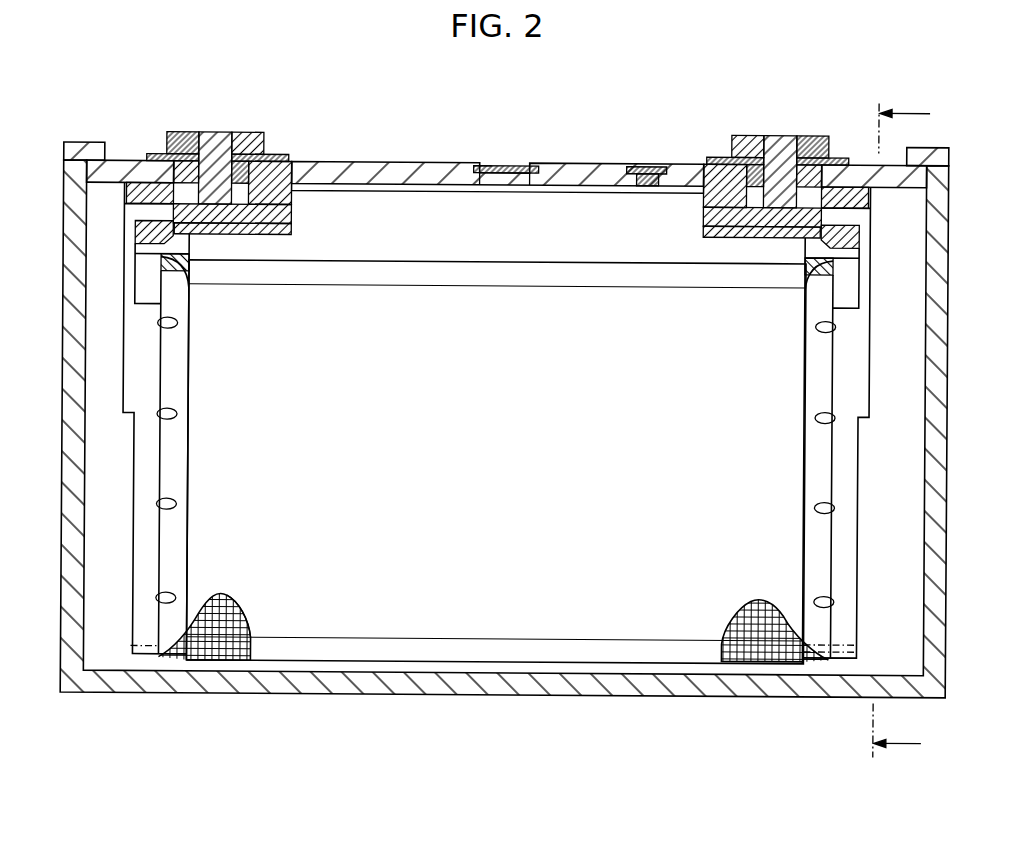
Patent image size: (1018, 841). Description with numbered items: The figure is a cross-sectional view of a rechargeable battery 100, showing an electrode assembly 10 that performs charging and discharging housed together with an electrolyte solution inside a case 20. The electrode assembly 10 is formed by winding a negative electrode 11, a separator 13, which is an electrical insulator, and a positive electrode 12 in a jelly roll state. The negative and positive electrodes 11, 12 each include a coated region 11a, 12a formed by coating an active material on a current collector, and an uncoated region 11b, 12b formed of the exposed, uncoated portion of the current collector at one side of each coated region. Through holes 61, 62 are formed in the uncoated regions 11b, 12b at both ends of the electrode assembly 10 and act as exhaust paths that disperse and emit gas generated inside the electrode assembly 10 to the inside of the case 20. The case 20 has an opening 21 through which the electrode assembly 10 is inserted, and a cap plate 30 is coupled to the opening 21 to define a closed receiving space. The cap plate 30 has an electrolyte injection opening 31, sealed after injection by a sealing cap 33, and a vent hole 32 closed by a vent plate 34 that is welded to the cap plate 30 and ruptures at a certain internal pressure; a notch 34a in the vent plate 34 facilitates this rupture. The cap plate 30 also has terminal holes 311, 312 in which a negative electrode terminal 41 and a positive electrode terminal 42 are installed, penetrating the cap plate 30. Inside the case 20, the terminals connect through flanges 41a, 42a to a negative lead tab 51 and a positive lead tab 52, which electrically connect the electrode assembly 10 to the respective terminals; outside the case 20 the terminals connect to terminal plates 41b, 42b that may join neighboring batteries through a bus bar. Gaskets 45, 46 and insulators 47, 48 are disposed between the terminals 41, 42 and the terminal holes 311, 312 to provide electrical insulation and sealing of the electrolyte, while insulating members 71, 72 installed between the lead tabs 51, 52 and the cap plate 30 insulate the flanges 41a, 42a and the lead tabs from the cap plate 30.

The rechargeable battery 100 is at (508, 421).
The electrode assembly 10 is at (496, 499).
The negative electrode 11 is at (188, 684).
The coated region 11a is at (204, 664).
The uncoated region 11b is at (158, 690).
The positive electrode 12 is at (785, 686).
The coated region 12a is at (775, 670).
The uncoated region 12b is at (829, 692).
The separator 13 is at (280, 667).
The case 20 is at (531, 429).
The opening 21 is at (506, 135).
The cap plate 30 is at (507, 149).
The electrolyte injection opening 31 is at (632, 142).
The vent hole 32 is at (505, 149).
The sealing cap 33 is at (648, 140).
The vent plate 34 is at (514, 141).
The notch 34a is at (475, 138).
The negative electrode terminal 41 is at (232, 153).
The flange 41a is at (274, 151).
The terminal plate 41b is at (259, 110).
The positive electrode terminal 42 is at (762, 149).
The flange 42a is at (831, 142).
The terminal plate 42b is at (820, 113).
The gasket 45 is at (183, 112).
The gasket 46 is at (741, 133).
The insulator 47 is at (168, 126).
The insulator 48 is at (726, 156).
The negative lead tab 51 is at (101, 418).
The positive lead tab 52 is at (899, 423).
The through hole 61 is at (152, 441).
The through hole 62 is at (849, 445).
The insulating member 71 is at (182, 177).
The insulating member 72 is at (871, 227).
The terminal hole 311 is at (233, 134).
The terminal hole 312 is at (763, 139).